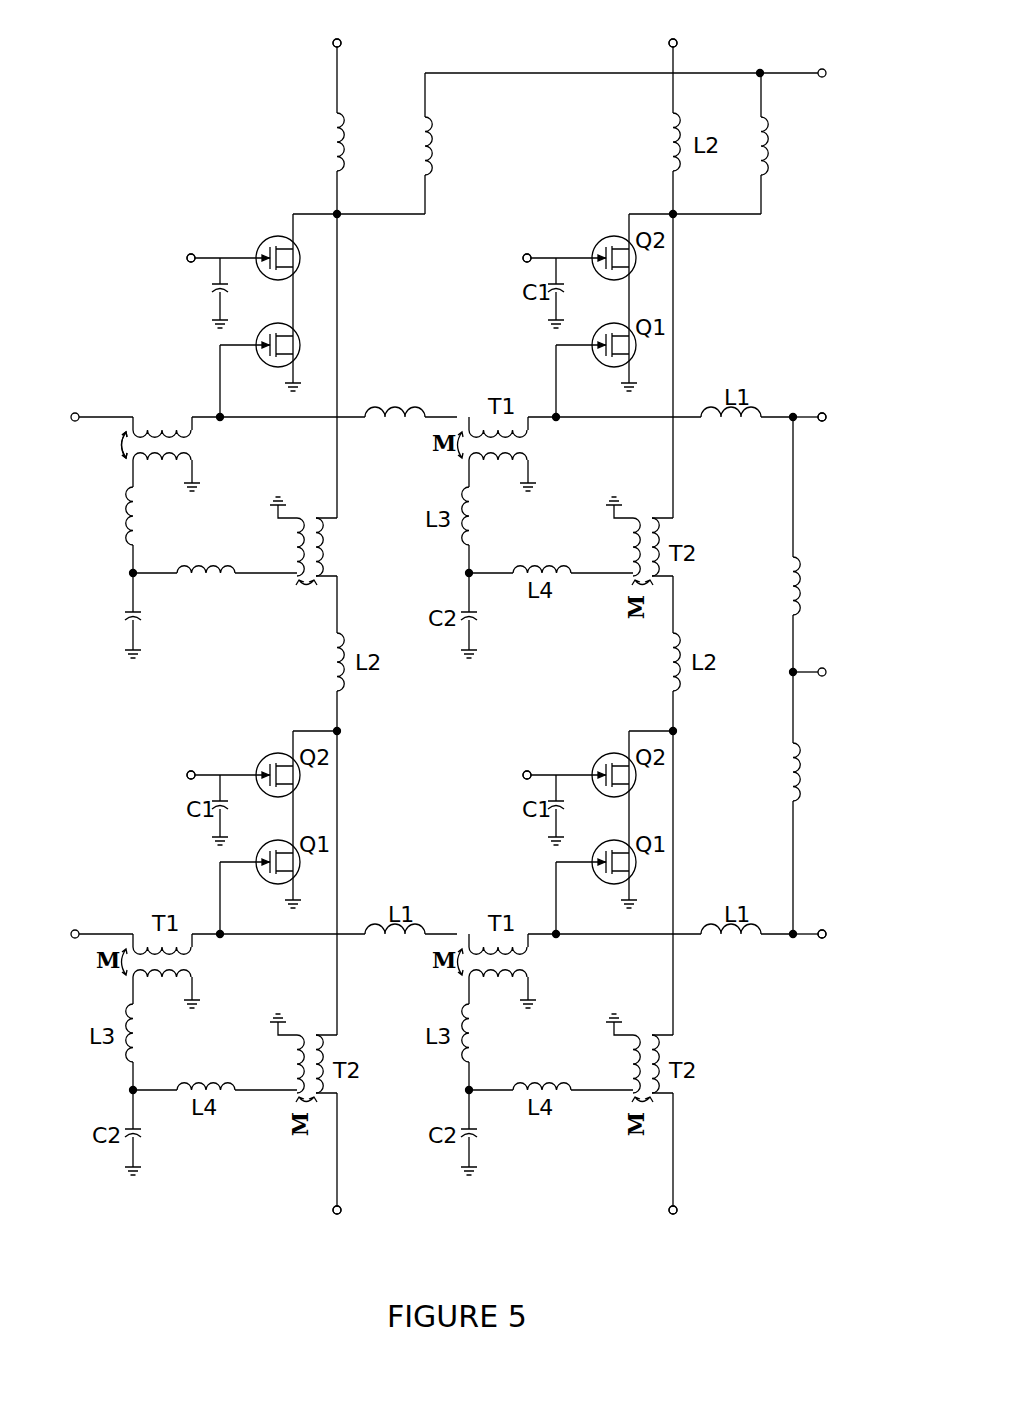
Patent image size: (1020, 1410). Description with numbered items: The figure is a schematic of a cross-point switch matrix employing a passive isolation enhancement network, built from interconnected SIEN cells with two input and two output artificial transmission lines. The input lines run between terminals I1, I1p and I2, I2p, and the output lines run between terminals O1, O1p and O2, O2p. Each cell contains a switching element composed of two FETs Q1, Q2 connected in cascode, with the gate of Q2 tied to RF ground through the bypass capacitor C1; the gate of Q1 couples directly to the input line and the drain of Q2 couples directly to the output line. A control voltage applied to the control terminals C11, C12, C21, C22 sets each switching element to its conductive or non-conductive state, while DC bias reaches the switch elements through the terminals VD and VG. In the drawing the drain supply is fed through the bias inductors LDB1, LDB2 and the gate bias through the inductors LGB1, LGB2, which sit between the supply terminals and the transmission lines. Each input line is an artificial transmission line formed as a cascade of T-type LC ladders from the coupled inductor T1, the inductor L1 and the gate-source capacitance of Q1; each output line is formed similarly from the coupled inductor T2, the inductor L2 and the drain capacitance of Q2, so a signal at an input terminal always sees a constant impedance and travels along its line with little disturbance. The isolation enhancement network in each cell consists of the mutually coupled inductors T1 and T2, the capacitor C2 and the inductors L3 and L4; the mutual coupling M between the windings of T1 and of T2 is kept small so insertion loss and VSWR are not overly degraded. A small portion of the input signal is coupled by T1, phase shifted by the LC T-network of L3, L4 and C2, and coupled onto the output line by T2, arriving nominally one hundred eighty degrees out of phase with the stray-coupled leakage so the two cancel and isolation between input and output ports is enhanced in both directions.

The FET Q1 is at (275, 366).
The FET Q2 is at (262, 268).
The RF bypass capacitor C1 is at (207, 293).
The capacitor C2 is at (116, 615).
The mutually coupled inductor T1 is at (161, 442).
The mutually coupled inductor T2 is at (315, 558).
The inductor L1 is at (395, 401).
The inductor L2 is at (358, 126).
The inductor L3 is at (111, 530).
The inductor L4 is at (215, 584).
The mutual inductance M is at (111, 444).
The drain bias inductor 1 LDB1 is at (415, 143).
The drain bias inductor 2 LDB2 is at (751, 143).
The gate bias inductor 1 LGB1 is at (828, 544).
The gate bias inductor 2 LGB2 is at (828, 803).
The bias terminal VD is at (651, 78).
The bias terminal VG is at (833, 677).
The input port I1 is at (90, 416).
The input port I2 is at (90, 933).
The input transmission line terminal I1p is at (841, 422).
The input transmission line terminal I2p is at (841, 941).
The output port O1 is at (336, 1230).
The output port O2 is at (672, 1230).
The output transmission line terminal O1p is at (346, 26).
The output transmission line terminal O2p is at (684, 26).
The control terminal C11 is at (169, 260).
The control terminal C12 is at (505, 260).
The control terminal C21 is at (169, 777).
The control terminal C22 is at (505, 777).